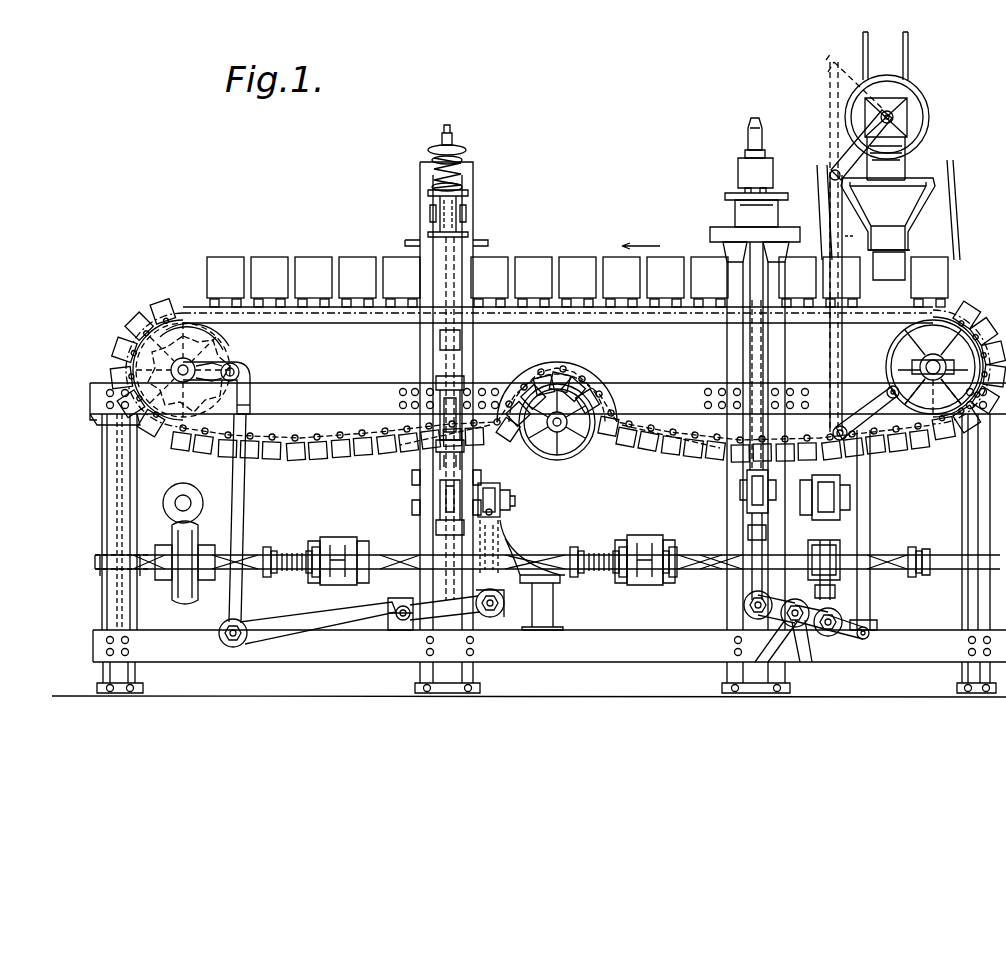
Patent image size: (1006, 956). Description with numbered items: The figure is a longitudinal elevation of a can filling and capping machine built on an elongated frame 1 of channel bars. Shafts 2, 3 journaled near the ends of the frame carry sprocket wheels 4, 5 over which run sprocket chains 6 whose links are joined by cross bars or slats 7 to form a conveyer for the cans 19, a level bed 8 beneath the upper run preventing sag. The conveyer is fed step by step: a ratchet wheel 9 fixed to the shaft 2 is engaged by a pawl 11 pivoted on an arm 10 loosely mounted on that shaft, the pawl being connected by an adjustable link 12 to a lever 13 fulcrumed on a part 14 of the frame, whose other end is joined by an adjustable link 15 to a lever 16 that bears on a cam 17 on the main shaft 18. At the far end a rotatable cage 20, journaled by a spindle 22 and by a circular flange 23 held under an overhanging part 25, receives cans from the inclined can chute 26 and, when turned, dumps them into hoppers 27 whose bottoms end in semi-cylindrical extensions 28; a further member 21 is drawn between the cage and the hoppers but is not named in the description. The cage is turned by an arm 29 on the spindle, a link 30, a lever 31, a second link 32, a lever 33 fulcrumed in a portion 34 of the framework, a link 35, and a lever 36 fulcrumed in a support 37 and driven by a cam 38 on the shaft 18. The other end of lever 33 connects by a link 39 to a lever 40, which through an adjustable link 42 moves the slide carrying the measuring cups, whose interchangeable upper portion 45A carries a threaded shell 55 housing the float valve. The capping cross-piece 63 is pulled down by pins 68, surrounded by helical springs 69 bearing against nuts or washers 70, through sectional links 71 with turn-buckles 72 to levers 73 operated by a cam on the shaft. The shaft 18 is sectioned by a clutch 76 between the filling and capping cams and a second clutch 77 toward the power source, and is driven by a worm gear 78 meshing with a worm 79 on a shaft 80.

The elongated frame 1 is at (529, 540).
The shaft 2 is at (155, 383).
The shaft 3 is at (946, 365).
The sprocket wheels 4 is at (224, 348).
The sprocket wheels 5 is at (912, 345).
The sprocket chains 6 is at (563, 370).
The cross bars or slats 7 is at (165, 306).
The level bed or platform 8 is at (519, 320).
The ratchet wheel 9 is at (167, 356).
The arm 10 is at (217, 372).
The pawl 11 is at (244, 388).
The adjustable link 12 is at (247, 503).
The lever 13 is at (307, 624).
The part 14 is at (434, 622).
The adjustable link 15 is at (500, 540).
The lever 16 is at (493, 486).
The cam 17 is at (504, 610).
The main shaft 18 is at (543, 568).
The cans 19 is at (577, 275).
The rotatable cage or skeleton frame 20 is at (910, 112).
The feed cylinder 21 is at (905, 158).
The spindle or axle 22 is at (880, 117).
The outwardly projecting flange or rib 23 is at (920, 128).
The overhanging part 25 is at (912, 84).
The can chute 26 is at (905, 52).
The hoppers 27 is at (888, 214).
The semi-cylindrical extensions 28 is at (889, 265).
The arm 29 is at (838, 150).
The link 30 is at (856, 235).
The lever 31 is at (872, 405).
The second link 32 is at (870, 478).
The lever 33 is at (848, 630).
The portion of the framework 34 is at (778, 626).
The link 35 is at (822, 580).
The lever 36 is at (834, 489).
The support 37 is at (820, 478).
The cam 38 is at (813, 555).
The link 39 is at (755, 537).
The lever 40 is at (750, 490).
The adjustable link 42 is at (745, 370).
The upper portion of the measuring cup 45A is at (755, 169).
The threaded shell 55 is at (762, 135).
The beam or cross-piece 63 is at (458, 205).
The pins 68 is at (434, 170).
The helical springs 69 is at (462, 162).
The nuts or washers 70 is at (455, 145).
The sectional links 71 is at (435, 328).
The turn-buckles 72 is at (460, 440).
The levers 73 is at (440, 498).
The clutch 76 is at (640, 534).
The second clutch 77 is at (333, 536).
The worm gear 78 is at (195, 537).
The worm 79 is at (193, 503).
The shaft 80 is at (175, 503).